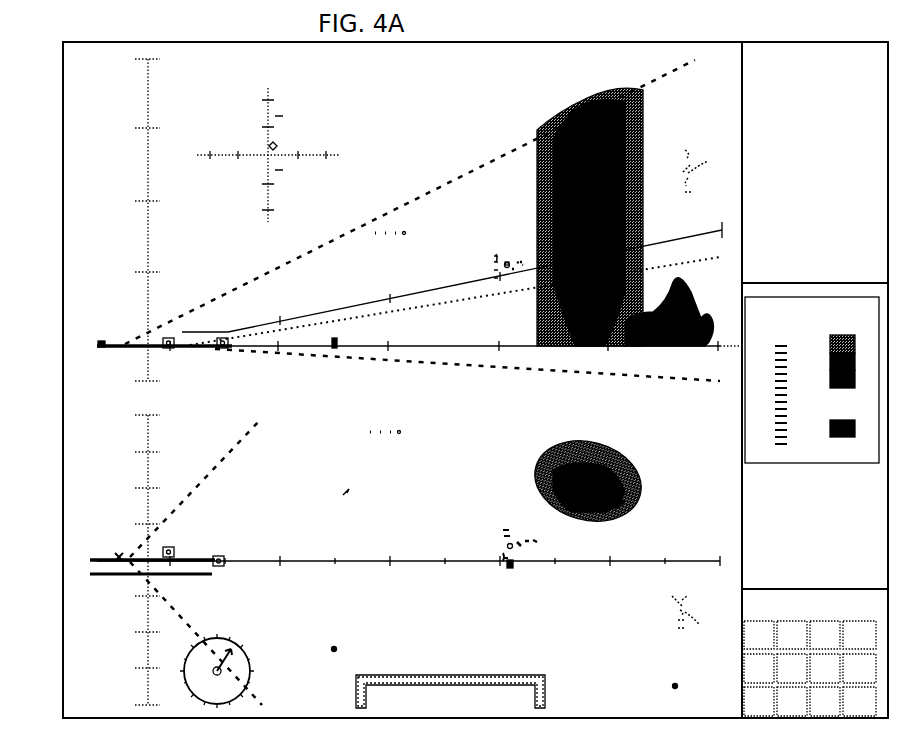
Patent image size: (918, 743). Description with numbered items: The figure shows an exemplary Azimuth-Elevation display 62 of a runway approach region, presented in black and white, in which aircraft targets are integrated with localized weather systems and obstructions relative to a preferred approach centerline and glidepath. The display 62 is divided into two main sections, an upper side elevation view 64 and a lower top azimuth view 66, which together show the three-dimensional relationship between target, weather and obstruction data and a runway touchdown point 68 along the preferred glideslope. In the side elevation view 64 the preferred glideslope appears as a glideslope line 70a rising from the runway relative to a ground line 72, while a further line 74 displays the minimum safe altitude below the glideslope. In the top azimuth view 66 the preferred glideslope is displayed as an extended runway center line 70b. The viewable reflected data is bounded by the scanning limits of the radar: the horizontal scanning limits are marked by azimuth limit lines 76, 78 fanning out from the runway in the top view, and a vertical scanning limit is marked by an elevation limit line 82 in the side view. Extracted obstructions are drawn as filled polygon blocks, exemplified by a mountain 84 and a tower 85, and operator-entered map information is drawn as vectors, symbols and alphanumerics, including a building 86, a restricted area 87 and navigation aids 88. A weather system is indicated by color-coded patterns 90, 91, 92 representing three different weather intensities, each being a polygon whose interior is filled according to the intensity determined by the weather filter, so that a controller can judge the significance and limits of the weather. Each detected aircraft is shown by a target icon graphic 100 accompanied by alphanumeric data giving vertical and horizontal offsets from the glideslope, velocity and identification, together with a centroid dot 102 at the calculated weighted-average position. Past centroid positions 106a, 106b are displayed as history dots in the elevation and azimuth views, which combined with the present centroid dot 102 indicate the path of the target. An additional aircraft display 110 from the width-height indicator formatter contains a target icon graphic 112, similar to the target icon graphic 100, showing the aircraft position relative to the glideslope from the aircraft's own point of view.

The display 62 is at (494, 40).
The side elevation view 64 is at (106, 143).
The top azimuth view 66 is at (106, 482).
The runway touchdown point 68 is at (168, 337).
The glideslope line 70a is at (344, 306).
The extended runway center line 70b is at (355, 566).
The ground line 72 is at (418, 345).
The minimum safe altitude line 74 is at (499, 296).
The azimuth limit line 76 is at (214, 474).
The azimuth limit line 78 is at (186, 616).
The elevation limit line 82 is at (552, 376).
The mountain 84 is at (682, 290).
The tower 85 is at (330, 496).
The building 86 is at (336, 340).
The restricted area 87 is at (512, 674).
The navigation aids 88 is at (232, 648).
The color-coded weather pattern 90 is at (636, 120).
The color-coded weather pattern 91 is at (616, 203).
The color-coded weather pattern 92 is at (554, 189).
The target icon graphic 100 is at (498, 242).
The centroid dot 102 is at (505, 266).
The past centroid position 106a is at (520, 262).
The past centroid position 106b is at (532, 552).
The additional aircraft display 110 is at (334, 94).
The target icon graphic 112 is at (343, 136).